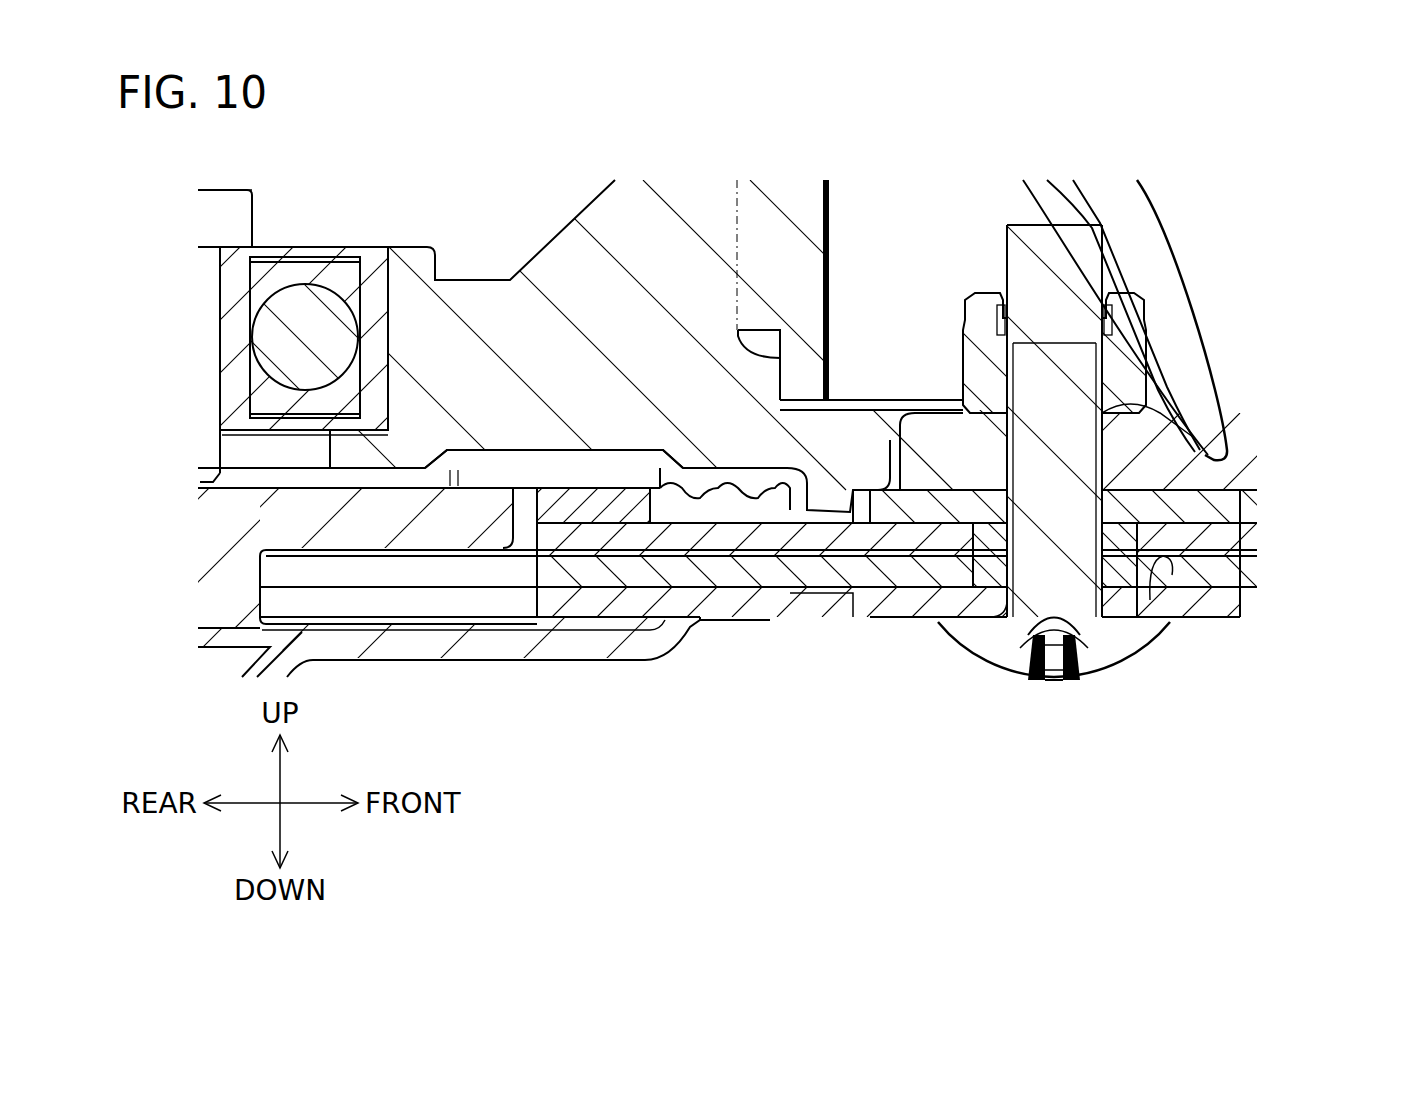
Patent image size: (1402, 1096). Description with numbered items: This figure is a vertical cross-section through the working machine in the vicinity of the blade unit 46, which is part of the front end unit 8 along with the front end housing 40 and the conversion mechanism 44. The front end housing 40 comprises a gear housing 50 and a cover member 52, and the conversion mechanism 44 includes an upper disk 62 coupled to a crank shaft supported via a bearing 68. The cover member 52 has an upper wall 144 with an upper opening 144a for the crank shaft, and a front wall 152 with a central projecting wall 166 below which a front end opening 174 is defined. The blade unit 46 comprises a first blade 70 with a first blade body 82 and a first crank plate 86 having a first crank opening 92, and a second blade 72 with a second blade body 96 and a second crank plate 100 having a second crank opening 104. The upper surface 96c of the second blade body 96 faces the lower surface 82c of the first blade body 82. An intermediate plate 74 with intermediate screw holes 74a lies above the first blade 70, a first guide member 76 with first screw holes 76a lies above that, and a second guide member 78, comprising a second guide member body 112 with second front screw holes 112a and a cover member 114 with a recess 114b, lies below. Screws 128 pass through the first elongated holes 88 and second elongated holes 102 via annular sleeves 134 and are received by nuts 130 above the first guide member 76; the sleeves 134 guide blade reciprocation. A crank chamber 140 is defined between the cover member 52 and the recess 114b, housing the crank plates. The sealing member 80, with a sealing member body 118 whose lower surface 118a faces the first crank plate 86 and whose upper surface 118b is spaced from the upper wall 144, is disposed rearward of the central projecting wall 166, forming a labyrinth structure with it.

The front end unit 8 is at (474, 684).
The front end housing 40 is at (810, 262).
The conversion mechanism 44 is at (191, 221).
The blade unit 46 is at (602, 684).
The gear housing 50 is at (810, 328).
The cover member 52 is at (717, 317).
The upper disk 62 is at (220, 372).
The bearing 68 is at (297, 297).
The first blade 70 is at (1228, 485).
The second blade 72 is at (1195, 577).
The intermediate plate 74 is at (1213, 527).
The intermediate screw hole 74a is at (1060, 370).
The first guide member 76 is at (1180, 460).
The first screw hole 76a is at (1093, 310).
The second guide member 78 is at (1233, 600).
The sealing member 80 is at (753, 503).
The first blade body 82 is at (1222, 542).
The lower surface of first blade body 82c is at (1215, 566).
The first crank plate 86 is at (580, 583).
The first elongated hole 88 is at (1007, 603).
The first crank opening 92 is at (510, 468).
The second blade body 96 is at (1197, 580).
The upper surface of second blade body 96c is at (1152, 585).
The second crank plate 100 is at (577, 580).
The second elongated hole 102 is at (1003, 620).
The second crank opening 104 is at (520, 590).
The second guide member body 112 is at (1137, 603).
The second front screw hole 112a is at (1022, 628).
The cover member 114 is at (773, 620).
The recess 114b is at (415, 655).
The sealing member body 118 is at (702, 627).
The lower surface of sealing member body 118a is at (833, 500).
The upper surface of sealing member body 118b is at (660, 467).
The screw 128 is at (1040, 237).
The nut 130 is at (990, 307).
The sleeve 134 is at (987, 487).
The crank chamber 140 is at (414, 576).
The upper wall 144 is at (740, 330).
The upper opening 144a is at (300, 500).
The front wall 152 is at (962, 731).
The central projecting wall 166 is at (845, 610).
The front end opening 174 is at (773, 583).